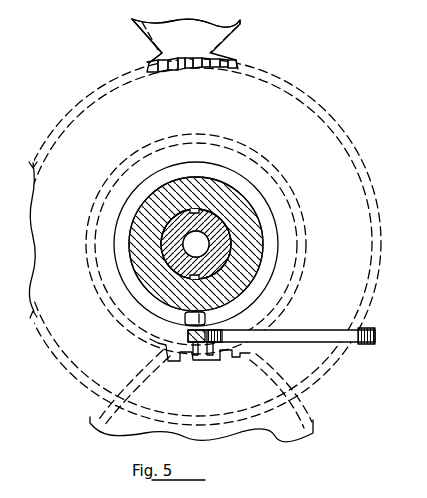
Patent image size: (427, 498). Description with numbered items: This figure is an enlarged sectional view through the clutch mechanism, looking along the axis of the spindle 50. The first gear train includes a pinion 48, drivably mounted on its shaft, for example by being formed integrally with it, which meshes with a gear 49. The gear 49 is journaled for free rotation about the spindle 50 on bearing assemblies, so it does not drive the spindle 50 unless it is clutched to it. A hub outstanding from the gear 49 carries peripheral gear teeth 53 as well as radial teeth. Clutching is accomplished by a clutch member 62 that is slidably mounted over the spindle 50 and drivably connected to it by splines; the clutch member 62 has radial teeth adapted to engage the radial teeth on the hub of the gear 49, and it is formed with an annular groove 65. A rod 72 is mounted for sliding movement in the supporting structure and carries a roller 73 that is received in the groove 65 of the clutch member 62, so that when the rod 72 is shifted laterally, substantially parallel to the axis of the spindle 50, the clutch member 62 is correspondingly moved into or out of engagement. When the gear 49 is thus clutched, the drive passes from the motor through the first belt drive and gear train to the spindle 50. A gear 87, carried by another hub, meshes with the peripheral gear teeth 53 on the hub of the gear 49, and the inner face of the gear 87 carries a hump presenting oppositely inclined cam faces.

The pinion 48 is at (208, 53).
The gear 49 is at (233, 65).
The spindle 50 is at (225, 227).
The clutch member 62 is at (258, 232).
The annular groove 65 is at (268, 260).
The roller 73 is at (208, 316).
The rod 72 is at (376, 333).
The gear 87 is at (238, 353).
The peripheral gear teeth 53 is at (152, 344).